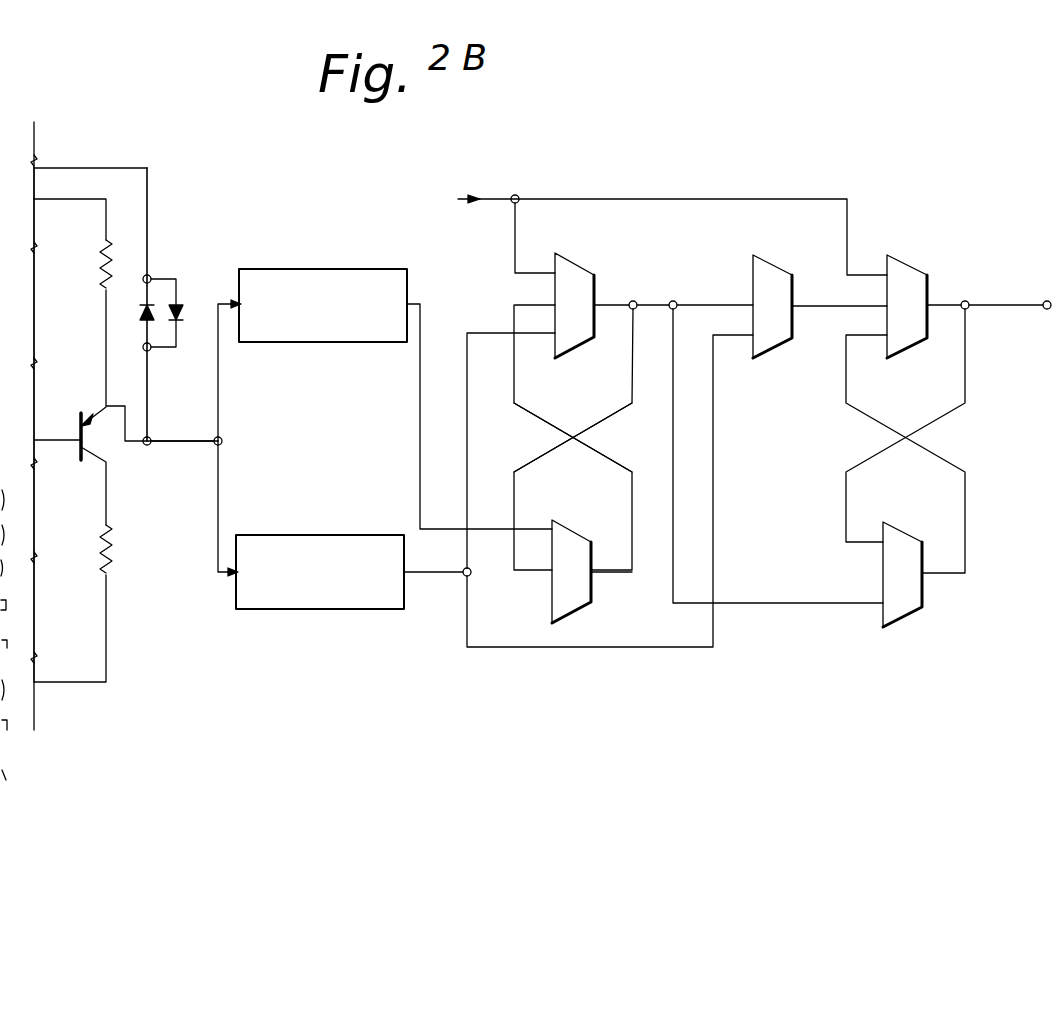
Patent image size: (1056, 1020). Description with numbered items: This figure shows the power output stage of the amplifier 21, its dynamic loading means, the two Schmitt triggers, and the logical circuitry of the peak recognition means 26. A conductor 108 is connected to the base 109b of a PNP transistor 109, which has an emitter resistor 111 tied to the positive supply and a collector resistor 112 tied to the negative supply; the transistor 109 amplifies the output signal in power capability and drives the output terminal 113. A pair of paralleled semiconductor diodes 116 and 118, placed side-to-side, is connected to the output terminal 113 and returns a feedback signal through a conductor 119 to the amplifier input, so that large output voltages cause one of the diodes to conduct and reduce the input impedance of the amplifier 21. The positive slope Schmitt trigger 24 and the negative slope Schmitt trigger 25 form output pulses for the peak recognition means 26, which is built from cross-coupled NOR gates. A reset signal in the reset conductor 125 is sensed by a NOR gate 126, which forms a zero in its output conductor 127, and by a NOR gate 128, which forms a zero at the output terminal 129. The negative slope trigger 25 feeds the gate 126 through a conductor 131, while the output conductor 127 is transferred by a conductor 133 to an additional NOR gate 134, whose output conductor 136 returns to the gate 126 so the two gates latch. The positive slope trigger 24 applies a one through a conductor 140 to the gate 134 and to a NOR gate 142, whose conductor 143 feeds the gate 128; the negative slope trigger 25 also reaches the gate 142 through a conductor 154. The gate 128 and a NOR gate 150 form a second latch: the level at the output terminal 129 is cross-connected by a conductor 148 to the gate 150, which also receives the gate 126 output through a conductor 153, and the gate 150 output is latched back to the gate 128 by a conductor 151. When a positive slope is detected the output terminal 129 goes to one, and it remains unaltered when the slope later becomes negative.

The amplifier 21 is at (118, 612).
The positive slope Schmitt trigger 24 is at (322, 269).
The negative slope Schmitt trigger 25 is at (308, 611).
The peak recognition means 26 is at (464, 662).
The conductor 108 is at (48, 444).
The PNP transistor 109 is at (88, 436).
The base 109b is at (78, 440).
The emitter resistor 111 is at (100, 269).
The collector resistor 112 is at (112, 542).
The output terminal 113 is at (166, 441).
The semiconductor diode 116 is at (140, 320).
The semiconductor diode 118 is at (180, 304).
The conductor 119 is at (147, 190).
The reset conductor 125 is at (497, 196).
The NOR gate 126 is at (575, 260).
The output conductor 127 is at (652, 302).
The NOR gate 128 is at (906, 268).
The output terminal 129 is at (1044, 305).
The conductor 131 is at (492, 333).
The conductor 133 is at (512, 486).
The NOR gate 134 is at (578, 612).
The output conductor 136 is at (604, 574).
The conductor 140 is at (418, 415).
The NOR gate 142 is at (770, 262).
The conductor 143 is at (815, 304).
The conductor 148 is at (966, 372).
The NOR gate 150 is at (905, 615).
The conductor 151 is at (966, 546).
The conductor 153 is at (756, 602).
The conductor 154 is at (545, 648).